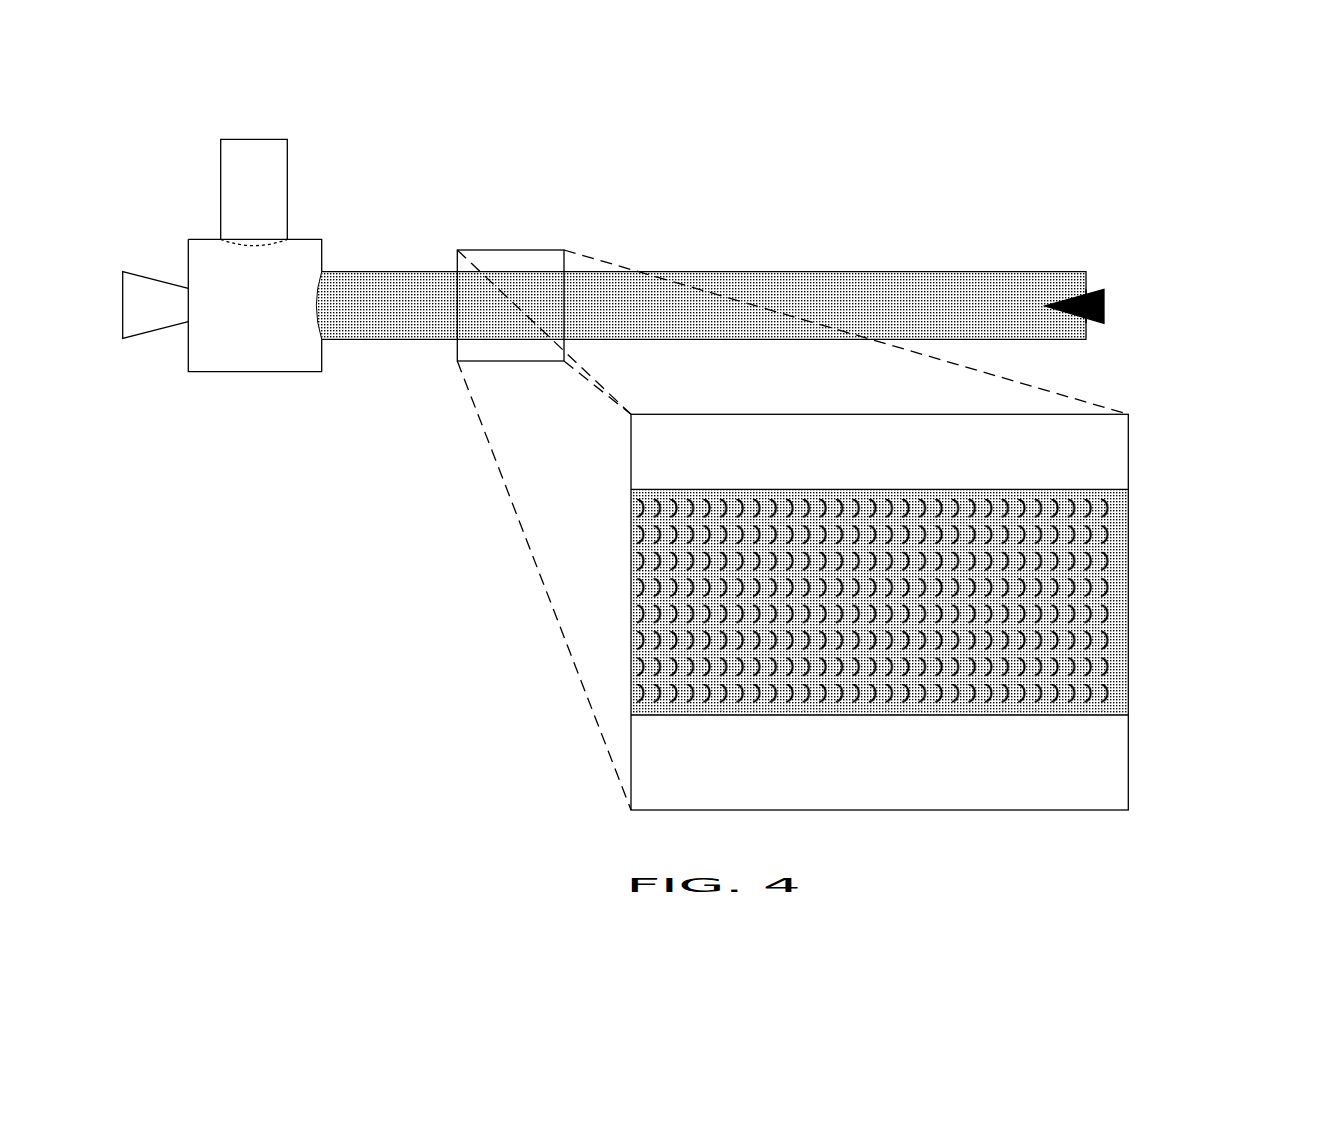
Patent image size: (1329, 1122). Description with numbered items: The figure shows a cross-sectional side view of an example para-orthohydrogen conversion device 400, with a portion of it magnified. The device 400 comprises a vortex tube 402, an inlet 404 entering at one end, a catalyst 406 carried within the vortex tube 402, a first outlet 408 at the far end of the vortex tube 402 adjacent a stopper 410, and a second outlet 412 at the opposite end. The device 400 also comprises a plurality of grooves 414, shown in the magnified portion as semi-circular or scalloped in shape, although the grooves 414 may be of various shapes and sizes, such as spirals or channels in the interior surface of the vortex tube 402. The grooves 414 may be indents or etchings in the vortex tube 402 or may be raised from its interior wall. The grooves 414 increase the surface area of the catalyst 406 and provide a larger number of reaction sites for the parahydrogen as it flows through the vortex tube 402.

The para-orthohydrogen conversion device 400 is at (1022, 157).
The vortex tube 402 is at (746, 272).
The inlet 404 is at (258, 139).
The catalyst 406 is at (397, 308).
The first outlet 408 is at (1086, 339).
The stopper 410 is at (1104, 306).
The second outlet 412 is at (189, 306).
The grooves 414 is at (835, 702).